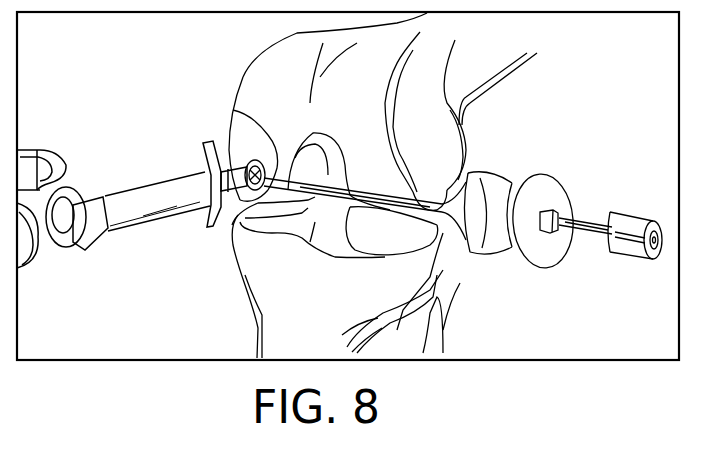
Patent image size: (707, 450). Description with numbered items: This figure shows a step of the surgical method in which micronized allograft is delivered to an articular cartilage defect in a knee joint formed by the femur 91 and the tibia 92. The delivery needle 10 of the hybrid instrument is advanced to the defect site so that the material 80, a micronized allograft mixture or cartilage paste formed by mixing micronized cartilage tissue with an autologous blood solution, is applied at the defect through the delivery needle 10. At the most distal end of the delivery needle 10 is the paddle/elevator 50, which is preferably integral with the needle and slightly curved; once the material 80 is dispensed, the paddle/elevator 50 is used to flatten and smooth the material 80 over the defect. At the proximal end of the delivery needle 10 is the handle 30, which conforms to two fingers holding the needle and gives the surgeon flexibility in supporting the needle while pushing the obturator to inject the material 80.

The delivery needle 10 is at (347, 180).
The handle 30 is at (548, 188).
The paddle/elevator 50 is at (241, 76).
The material 80 is at (247, 165).
The femur 91 is at (245, 115).
The tibia 92 is at (258, 277).